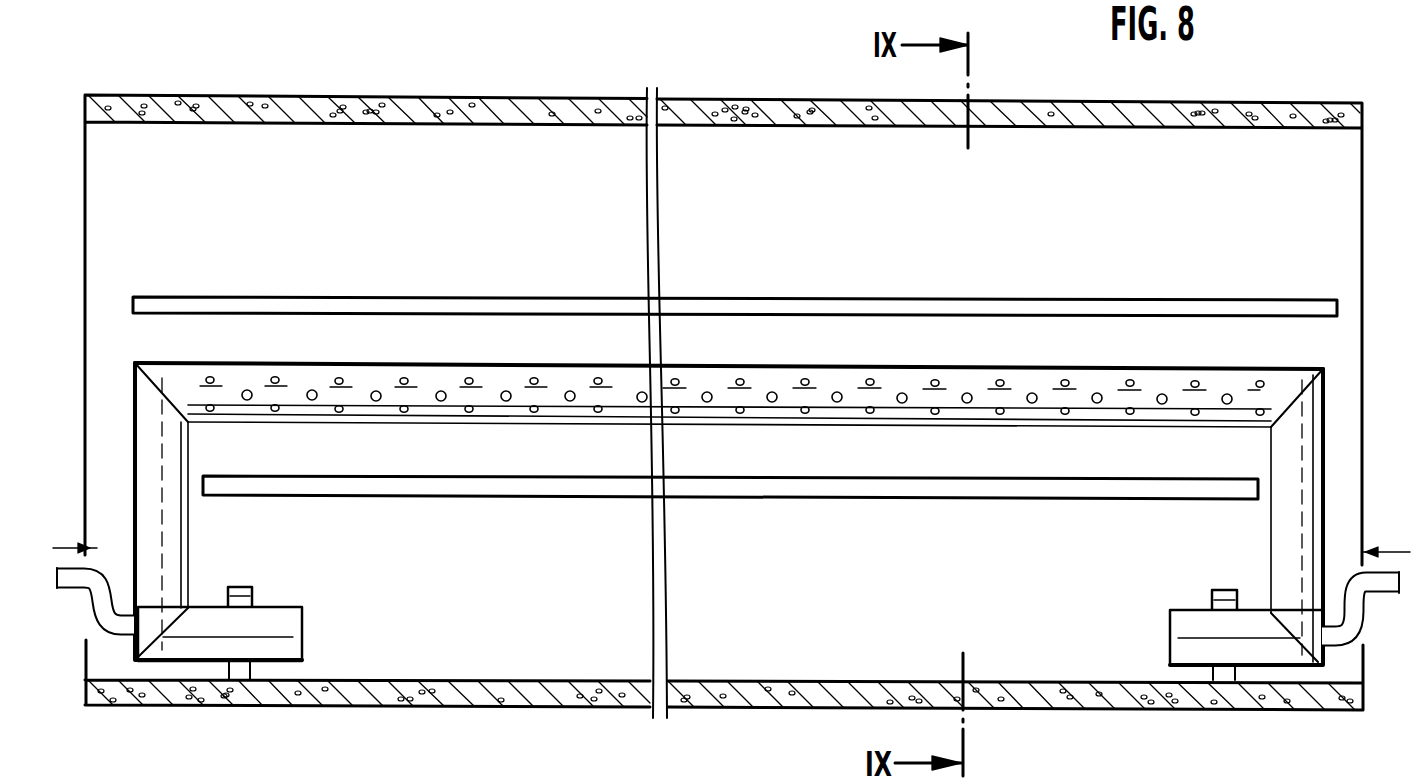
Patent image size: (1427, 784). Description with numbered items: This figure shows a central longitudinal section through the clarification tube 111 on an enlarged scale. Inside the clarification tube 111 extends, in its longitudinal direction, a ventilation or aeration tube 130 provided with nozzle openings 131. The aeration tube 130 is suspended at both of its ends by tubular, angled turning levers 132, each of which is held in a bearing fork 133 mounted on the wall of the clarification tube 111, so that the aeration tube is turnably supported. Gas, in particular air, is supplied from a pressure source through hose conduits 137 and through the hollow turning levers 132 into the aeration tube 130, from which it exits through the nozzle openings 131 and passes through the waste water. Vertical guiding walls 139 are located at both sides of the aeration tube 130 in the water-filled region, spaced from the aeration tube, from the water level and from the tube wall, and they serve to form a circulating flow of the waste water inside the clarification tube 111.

The clarification tube 111 is at (445, 98).
The aeration tube 130 is at (902, 414).
The nozzle openings 131 is at (438, 399).
The turning lever 132 is at (178, 540).
The bearing fork 133 is at (250, 592).
The hose conduits 137 is at (69, 576).
The guiding walls 139 is at (767, 306).